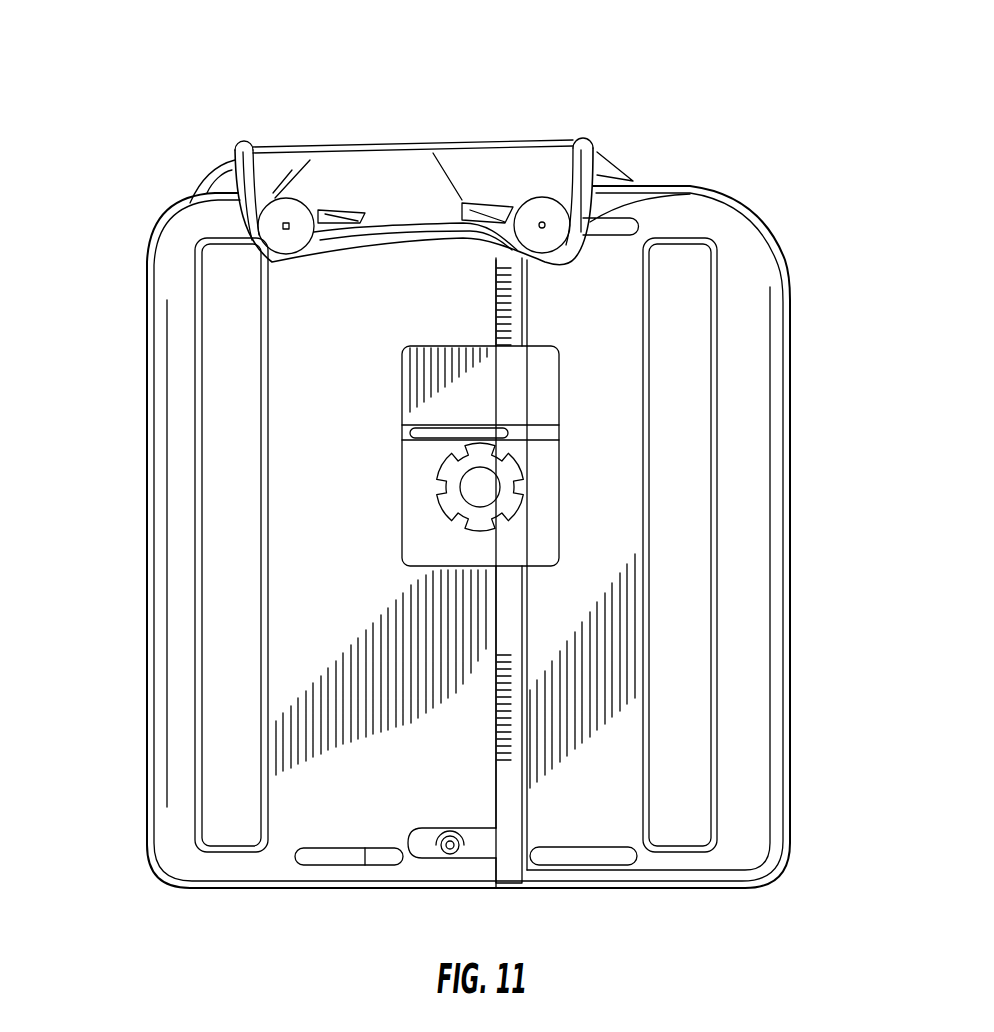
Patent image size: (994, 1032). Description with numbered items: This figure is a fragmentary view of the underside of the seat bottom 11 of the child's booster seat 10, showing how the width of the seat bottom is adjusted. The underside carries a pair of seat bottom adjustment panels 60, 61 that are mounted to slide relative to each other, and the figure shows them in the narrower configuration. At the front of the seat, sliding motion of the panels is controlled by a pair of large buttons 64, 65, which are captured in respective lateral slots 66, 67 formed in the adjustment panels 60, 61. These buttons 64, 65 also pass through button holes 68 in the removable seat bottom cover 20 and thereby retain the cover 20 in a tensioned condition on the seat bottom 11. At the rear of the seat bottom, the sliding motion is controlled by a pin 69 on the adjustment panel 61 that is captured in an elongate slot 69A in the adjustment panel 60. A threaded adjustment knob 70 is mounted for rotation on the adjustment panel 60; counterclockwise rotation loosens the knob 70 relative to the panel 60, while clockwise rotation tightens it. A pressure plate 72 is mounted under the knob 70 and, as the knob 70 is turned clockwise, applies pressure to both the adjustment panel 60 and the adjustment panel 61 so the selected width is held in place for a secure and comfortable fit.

The child's booster seat 10 is at (136, 210).
The seat bottom 11 is at (147, 612).
The seat bottom cover 20 is at (412, 167).
The seat bottom adjustment panel 60 is at (285, 827).
The seat bottom adjustment panel 61 is at (595, 835).
The button 64 is at (285, 225).
The button 65 is at (566, 222).
The lateral slot 66 is at (323, 212).
The lateral slot 67 is at (618, 184).
The button holes 68 is at (380, 203).
The pin 69 is at (450, 857).
The elongate slot 69A is at (422, 862).
The threaded adjustment knob 70 is at (513, 498).
The pressure plate 72 is at (545, 386).